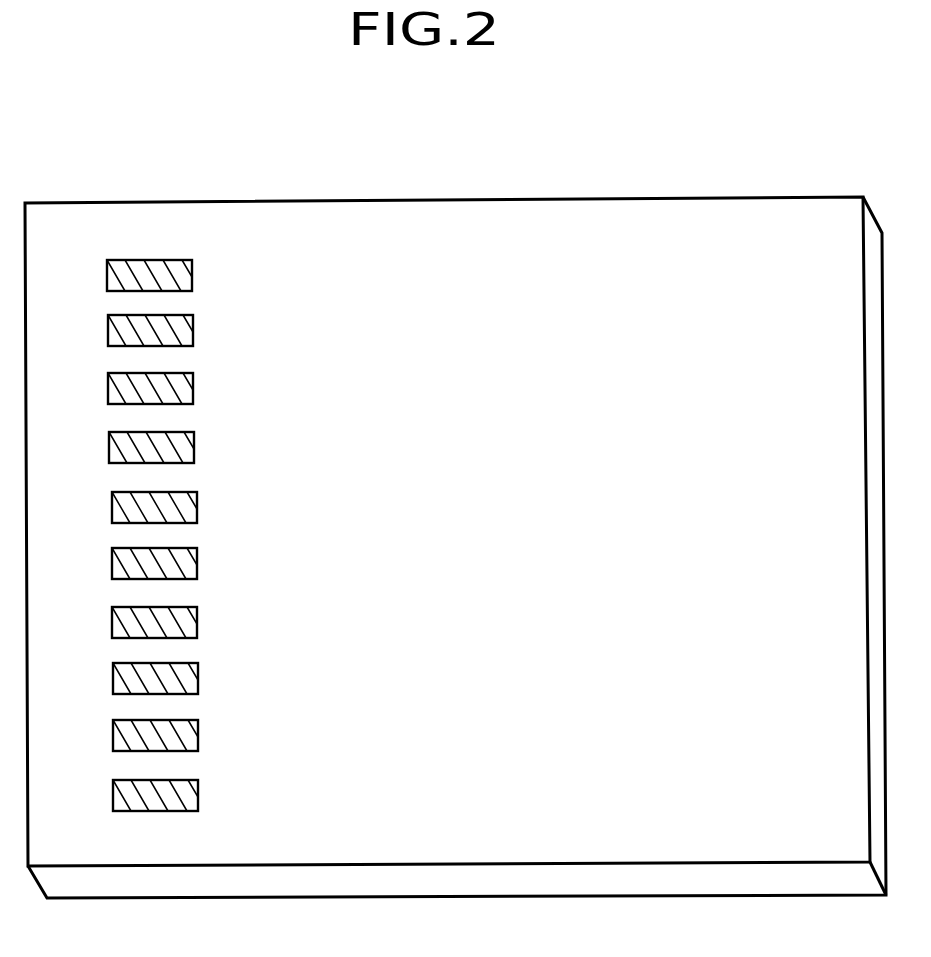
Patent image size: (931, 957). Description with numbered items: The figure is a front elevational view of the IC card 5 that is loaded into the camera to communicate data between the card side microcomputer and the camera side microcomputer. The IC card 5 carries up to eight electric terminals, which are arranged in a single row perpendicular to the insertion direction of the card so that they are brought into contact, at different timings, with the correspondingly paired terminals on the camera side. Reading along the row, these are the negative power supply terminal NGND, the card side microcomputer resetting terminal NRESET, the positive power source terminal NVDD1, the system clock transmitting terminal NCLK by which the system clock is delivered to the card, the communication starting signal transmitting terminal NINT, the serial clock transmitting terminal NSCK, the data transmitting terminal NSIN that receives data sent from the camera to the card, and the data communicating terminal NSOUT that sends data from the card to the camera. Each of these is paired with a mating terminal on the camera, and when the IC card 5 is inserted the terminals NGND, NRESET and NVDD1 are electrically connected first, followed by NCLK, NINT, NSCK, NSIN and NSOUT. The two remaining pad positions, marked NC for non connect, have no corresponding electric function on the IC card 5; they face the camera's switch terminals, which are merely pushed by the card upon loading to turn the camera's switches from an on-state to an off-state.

The IC card 5 is at (757, 197).
The negative power supply terminal NGND is at (212, 273).
The card side microcomputer resetting terminal NRESET is at (234, 335).
The positive power source terminal NVDD1 is at (213, 391).
The system clock transmitting terminal NCLK is at (216, 448).
The communication starting signal transmitting terminal NINT is at (216, 505).
The serial clock transmitting terminal NSCK is at (221, 563).
The data transmitting terminal NSIN is at (216, 620).
The data communicating terminal NSOUT is at (233, 676).
The non-connect terminal pads NC is at (220, 713).